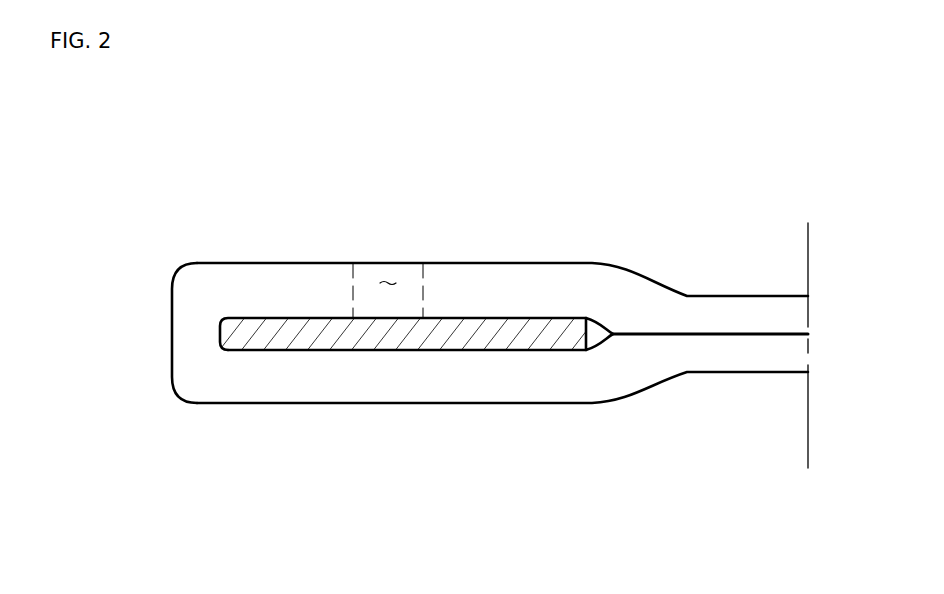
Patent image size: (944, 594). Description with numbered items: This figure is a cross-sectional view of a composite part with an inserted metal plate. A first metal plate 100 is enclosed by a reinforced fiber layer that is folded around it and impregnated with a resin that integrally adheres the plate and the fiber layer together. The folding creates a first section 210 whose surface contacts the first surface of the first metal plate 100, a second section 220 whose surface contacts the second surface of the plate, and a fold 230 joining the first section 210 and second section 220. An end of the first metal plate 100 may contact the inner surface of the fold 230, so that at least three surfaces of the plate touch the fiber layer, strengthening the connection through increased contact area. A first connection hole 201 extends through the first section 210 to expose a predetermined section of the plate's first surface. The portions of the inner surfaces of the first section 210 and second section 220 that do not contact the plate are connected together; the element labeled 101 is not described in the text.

The first metal plate 100 is at (262, 340).
The heating element body 101 is at (239, 350).
The first connection hole 201 is at (387, 282).
The first section 210 is at (328, 262).
The second section 220 is at (338, 378).
The fold 230 is at (188, 333).